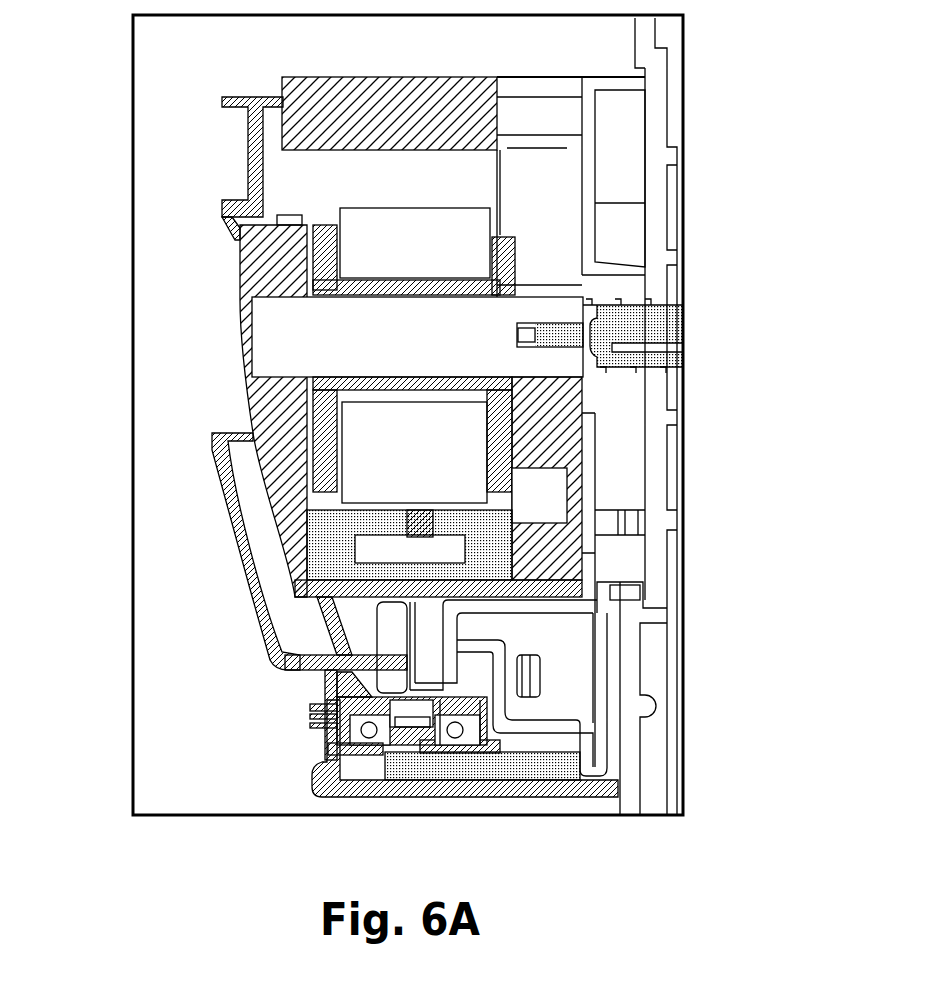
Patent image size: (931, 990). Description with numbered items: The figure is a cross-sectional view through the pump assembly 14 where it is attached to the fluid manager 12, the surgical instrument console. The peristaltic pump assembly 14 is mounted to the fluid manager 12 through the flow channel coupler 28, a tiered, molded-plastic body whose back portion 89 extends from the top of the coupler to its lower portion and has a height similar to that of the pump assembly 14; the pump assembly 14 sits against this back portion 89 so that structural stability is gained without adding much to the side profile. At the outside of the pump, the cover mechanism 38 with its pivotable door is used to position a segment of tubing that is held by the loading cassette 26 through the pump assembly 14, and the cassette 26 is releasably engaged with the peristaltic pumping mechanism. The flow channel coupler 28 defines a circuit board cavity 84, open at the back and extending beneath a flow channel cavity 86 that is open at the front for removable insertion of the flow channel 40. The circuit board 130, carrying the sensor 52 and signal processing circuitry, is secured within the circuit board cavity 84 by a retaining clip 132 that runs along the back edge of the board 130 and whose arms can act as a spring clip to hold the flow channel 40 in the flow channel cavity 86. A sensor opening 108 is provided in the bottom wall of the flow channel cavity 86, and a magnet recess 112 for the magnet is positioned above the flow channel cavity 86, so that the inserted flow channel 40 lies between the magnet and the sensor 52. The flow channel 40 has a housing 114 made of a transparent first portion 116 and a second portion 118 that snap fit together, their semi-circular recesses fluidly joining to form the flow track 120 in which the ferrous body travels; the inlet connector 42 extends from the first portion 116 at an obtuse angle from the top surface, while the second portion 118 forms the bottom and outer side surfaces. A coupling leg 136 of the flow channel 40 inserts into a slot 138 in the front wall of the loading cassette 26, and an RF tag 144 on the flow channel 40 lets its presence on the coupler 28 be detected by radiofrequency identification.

The fluid manager 12 is at (668, 99).
The pump assembly 14 is at (232, 339).
The loading cassette 26 is at (222, 553).
The flow channel coupler 28 is at (604, 669).
The cover mechanism 38 is at (232, 101).
The flow channel 40 is at (333, 740).
The inlet connector 42 is at (327, 672).
The sensor 52 is at (445, 765).
The circuit board cavity 84 is at (614, 773).
The flow channel cavity 86 is at (353, 747).
The back portion 89 is at (590, 466).
The sensor opening 108 is at (453, 745).
The magnet recess 112 is at (387, 623).
The housing 114 is at (498, 726).
The first portion 116 is at (330, 704).
The second portion 118 is at (383, 740).
The flow track 120 is at (470, 740).
The circuit board 130 is at (517, 781).
The retaining clip 132 is at (590, 746).
The coupling leg 136 is at (318, 715).
The slot 138 is at (317, 730).
The RF tag 144 is at (410, 707).